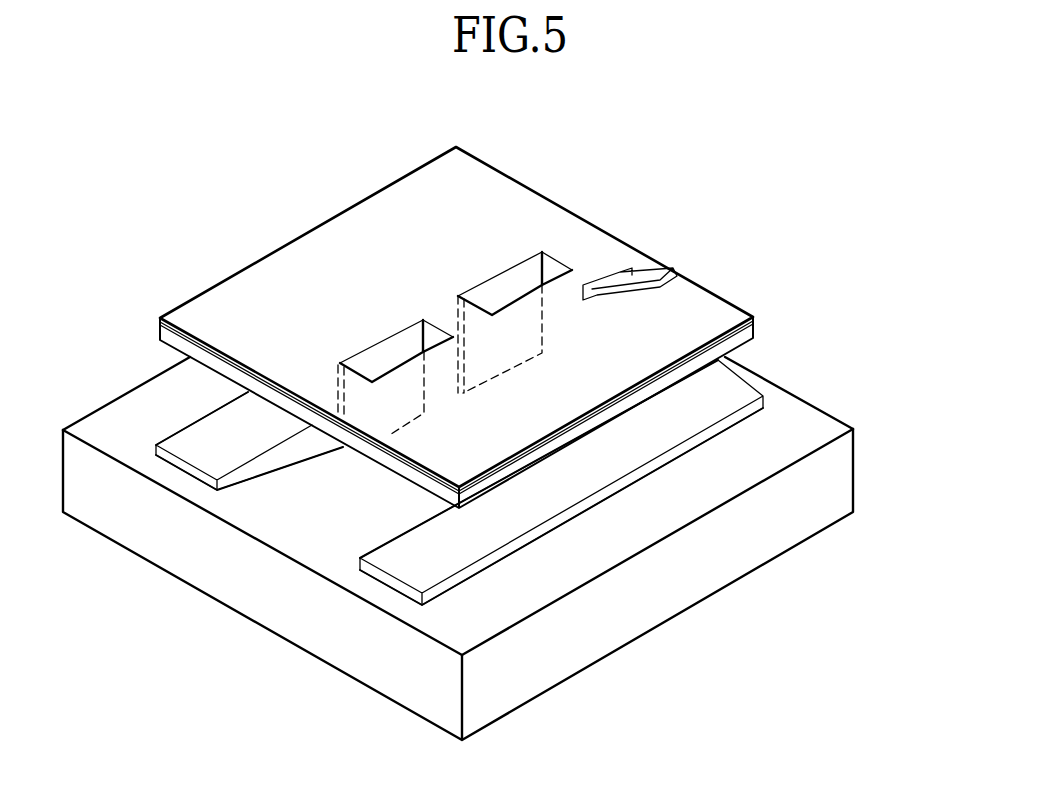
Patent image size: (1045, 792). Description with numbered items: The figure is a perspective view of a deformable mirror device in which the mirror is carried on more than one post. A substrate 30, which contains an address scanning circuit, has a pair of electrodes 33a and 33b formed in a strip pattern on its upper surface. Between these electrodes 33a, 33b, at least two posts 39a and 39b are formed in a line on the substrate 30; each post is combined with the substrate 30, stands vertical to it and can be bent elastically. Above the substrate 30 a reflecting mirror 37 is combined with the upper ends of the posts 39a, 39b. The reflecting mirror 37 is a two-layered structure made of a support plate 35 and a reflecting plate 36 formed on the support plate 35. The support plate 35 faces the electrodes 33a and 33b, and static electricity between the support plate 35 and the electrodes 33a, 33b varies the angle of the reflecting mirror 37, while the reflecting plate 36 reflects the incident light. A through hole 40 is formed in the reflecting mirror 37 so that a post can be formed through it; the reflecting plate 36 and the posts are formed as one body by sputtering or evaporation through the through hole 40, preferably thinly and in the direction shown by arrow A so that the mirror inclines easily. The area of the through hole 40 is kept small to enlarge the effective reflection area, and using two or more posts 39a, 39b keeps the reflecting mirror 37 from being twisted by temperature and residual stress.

The substrate 30 is at (795, 513).
The electrode 33a is at (760, 408).
The electrode 33b is at (203, 440).
The support plate 35 is at (755, 338).
The reflecting plate 36 is at (755, 318).
The reflecting mirror 37 is at (873, 258).
The post 39a is at (398, 393).
The post 39b is at (478, 345).
The through hole 40 is at (395, 357).
The arrow A is at (638, 270).